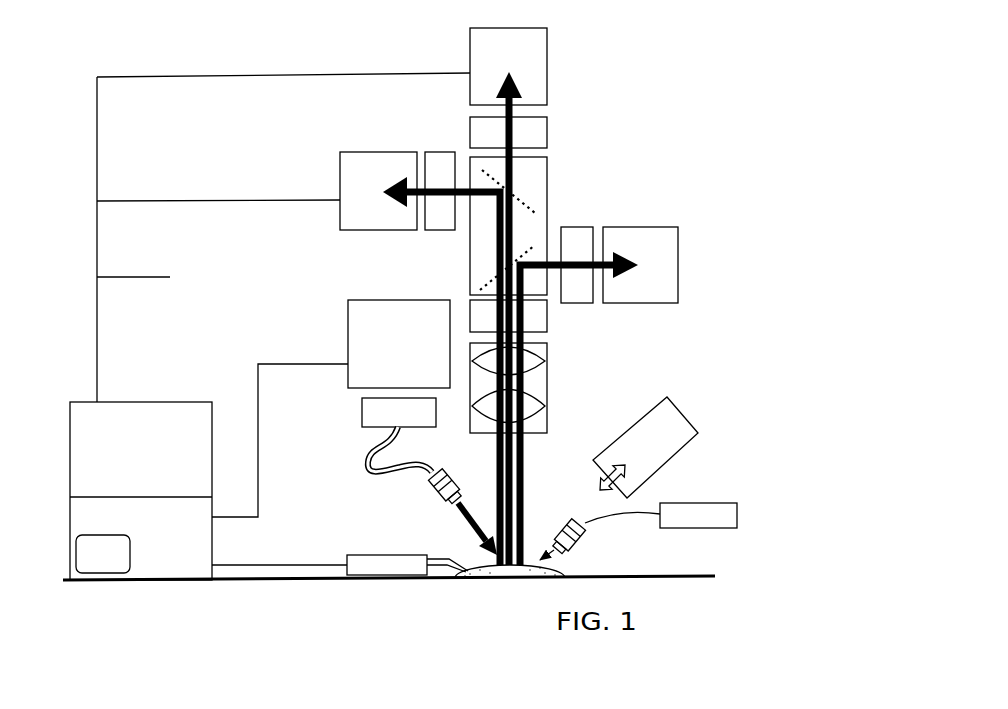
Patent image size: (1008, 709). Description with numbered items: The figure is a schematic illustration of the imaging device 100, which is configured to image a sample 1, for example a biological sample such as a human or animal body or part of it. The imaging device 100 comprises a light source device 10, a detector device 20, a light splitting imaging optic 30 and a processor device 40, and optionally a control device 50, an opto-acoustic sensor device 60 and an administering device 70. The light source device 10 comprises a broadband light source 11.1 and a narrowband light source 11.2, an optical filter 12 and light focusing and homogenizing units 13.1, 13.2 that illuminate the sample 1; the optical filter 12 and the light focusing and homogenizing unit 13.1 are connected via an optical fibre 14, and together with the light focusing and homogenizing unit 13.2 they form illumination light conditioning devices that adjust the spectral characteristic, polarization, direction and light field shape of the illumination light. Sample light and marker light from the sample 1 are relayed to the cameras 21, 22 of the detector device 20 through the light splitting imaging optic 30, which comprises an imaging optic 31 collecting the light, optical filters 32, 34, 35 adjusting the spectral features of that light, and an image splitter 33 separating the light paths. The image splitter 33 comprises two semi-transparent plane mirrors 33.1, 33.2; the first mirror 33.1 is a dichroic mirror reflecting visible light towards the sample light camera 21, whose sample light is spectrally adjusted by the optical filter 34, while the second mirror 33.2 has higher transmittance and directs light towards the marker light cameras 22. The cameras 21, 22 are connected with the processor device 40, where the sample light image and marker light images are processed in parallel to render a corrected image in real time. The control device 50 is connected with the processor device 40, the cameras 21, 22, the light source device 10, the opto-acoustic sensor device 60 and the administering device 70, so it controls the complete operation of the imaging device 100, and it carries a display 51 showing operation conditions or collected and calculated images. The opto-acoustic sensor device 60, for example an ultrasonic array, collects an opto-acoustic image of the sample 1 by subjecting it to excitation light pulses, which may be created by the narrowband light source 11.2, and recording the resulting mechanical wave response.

The imaging device 100 is at (170, 62).
The sample 1 is at (503, 570).
The light source device 10 is at (237, 367).
The broadband light source 11.1 is at (353, 340).
The narrowband light source 11.2 is at (688, 522).
The optical filter 12 is at (365, 412).
The light focusing and homogenizing unit 13.1 is at (377, 627).
The light focusing and homogenizing unit 13.2 is at (588, 540).
The optical fibre 14 is at (372, 465).
The detector device 20 is at (730, 300).
The sample light camera 21 is at (670, 255).
The marker light camera 22 is at (547, 73).
The light splitting imaging optic 30 is at (574, 182).
The imaging optic 31 is at (542, 382).
The optical filter 32 is at (551, 316).
The image splitter 33 is at (547, 178).
The first mirror 33.1 is at (497, 270).
The second mirror 33.2 is at (498, 185).
The optical filter 34 is at (579, 307).
The optical filter 35 is at (467, 130).
The processor device 40 is at (200, 432).
The control device 50 is at (200, 527).
The display 51 is at (113, 565).
The opto-acoustic sensor device 60 is at (212, 540).
The administering device 70 is at (345, 572).